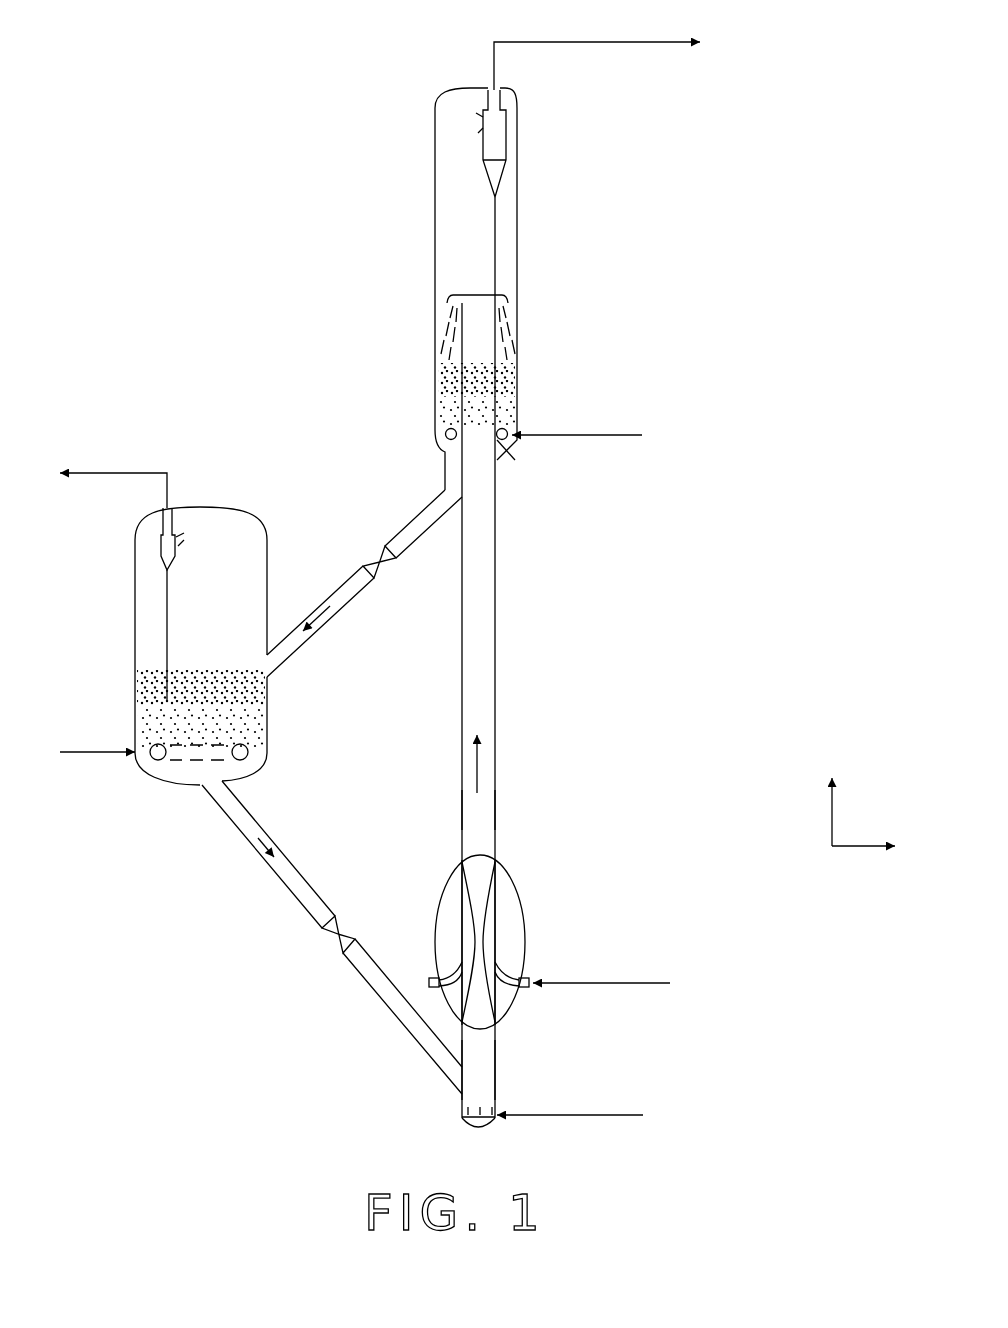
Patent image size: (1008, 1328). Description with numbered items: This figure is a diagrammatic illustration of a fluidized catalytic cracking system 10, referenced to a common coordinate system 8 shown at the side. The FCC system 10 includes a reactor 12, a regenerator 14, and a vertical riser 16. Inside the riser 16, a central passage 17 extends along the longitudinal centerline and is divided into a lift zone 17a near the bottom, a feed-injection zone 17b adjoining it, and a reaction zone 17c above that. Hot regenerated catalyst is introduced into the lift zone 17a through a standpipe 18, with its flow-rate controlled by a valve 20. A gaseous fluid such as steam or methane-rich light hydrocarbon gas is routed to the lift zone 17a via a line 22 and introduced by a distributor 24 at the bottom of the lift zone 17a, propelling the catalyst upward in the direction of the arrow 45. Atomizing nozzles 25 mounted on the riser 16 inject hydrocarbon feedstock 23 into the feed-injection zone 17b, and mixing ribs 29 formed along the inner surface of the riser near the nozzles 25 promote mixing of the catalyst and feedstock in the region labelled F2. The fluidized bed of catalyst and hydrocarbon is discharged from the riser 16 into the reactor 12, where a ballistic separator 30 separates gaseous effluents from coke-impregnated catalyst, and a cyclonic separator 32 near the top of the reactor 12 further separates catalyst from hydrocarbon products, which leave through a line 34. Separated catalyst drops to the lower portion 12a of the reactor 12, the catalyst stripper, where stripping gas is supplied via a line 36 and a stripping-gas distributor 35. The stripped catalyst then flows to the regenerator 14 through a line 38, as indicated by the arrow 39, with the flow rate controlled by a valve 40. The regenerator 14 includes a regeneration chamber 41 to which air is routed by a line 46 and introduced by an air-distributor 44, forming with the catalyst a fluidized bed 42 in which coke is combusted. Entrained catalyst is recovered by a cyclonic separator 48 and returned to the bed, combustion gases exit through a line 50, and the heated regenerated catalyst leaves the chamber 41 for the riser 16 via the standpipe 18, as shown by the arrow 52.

The coordinate system 8 is at (851, 848).
The FCC system 10 is at (231, 270).
The reactor 12 is at (528, 262).
The lower portion of the reactor 12a is at (437, 385).
The regenerator 14 is at (132, 632).
The riser 16 is at (503, 663).
The central passage 17 is at (466, 623).
The lift zone 17a is at (484, 1068).
The feed-injection zone 17b is at (480, 875).
The reaction zone 17c is at (480, 820).
The standpipe 18 is at (390, 1010).
The valve 20 is at (330, 935).
The line 22 is at (583, 1115).
The hydrocarbon feedstock 23 is at (618, 983).
The distributor 24 is at (466, 1118).
The atomizing nozzles 25 is at (500, 958).
The mixing ribs 29 is at (462, 927).
The ballistic separator 30 is at (440, 294).
The cyclonic separator 32 is at (508, 173).
The line 34 is at (578, 42).
The stripping-gas distributor 35 is at (503, 443).
The line 36 is at (582, 435).
The line 38 is at (425, 508).
The arrow 39 is at (346, 606).
The valve 40 is at (371, 560).
The regeneration chamber 41 is at (240, 588).
The fluidized bed 42 is at (140, 690).
The air-distributor 44 is at (252, 768).
The arrow 45 is at (478, 758).
The line 46 is at (77, 754).
The cyclonic separator 48 is at (160, 545).
The line 50 is at (112, 473).
The arrow 52 is at (233, 812).
The venturi zone F2 is at (508, 875).